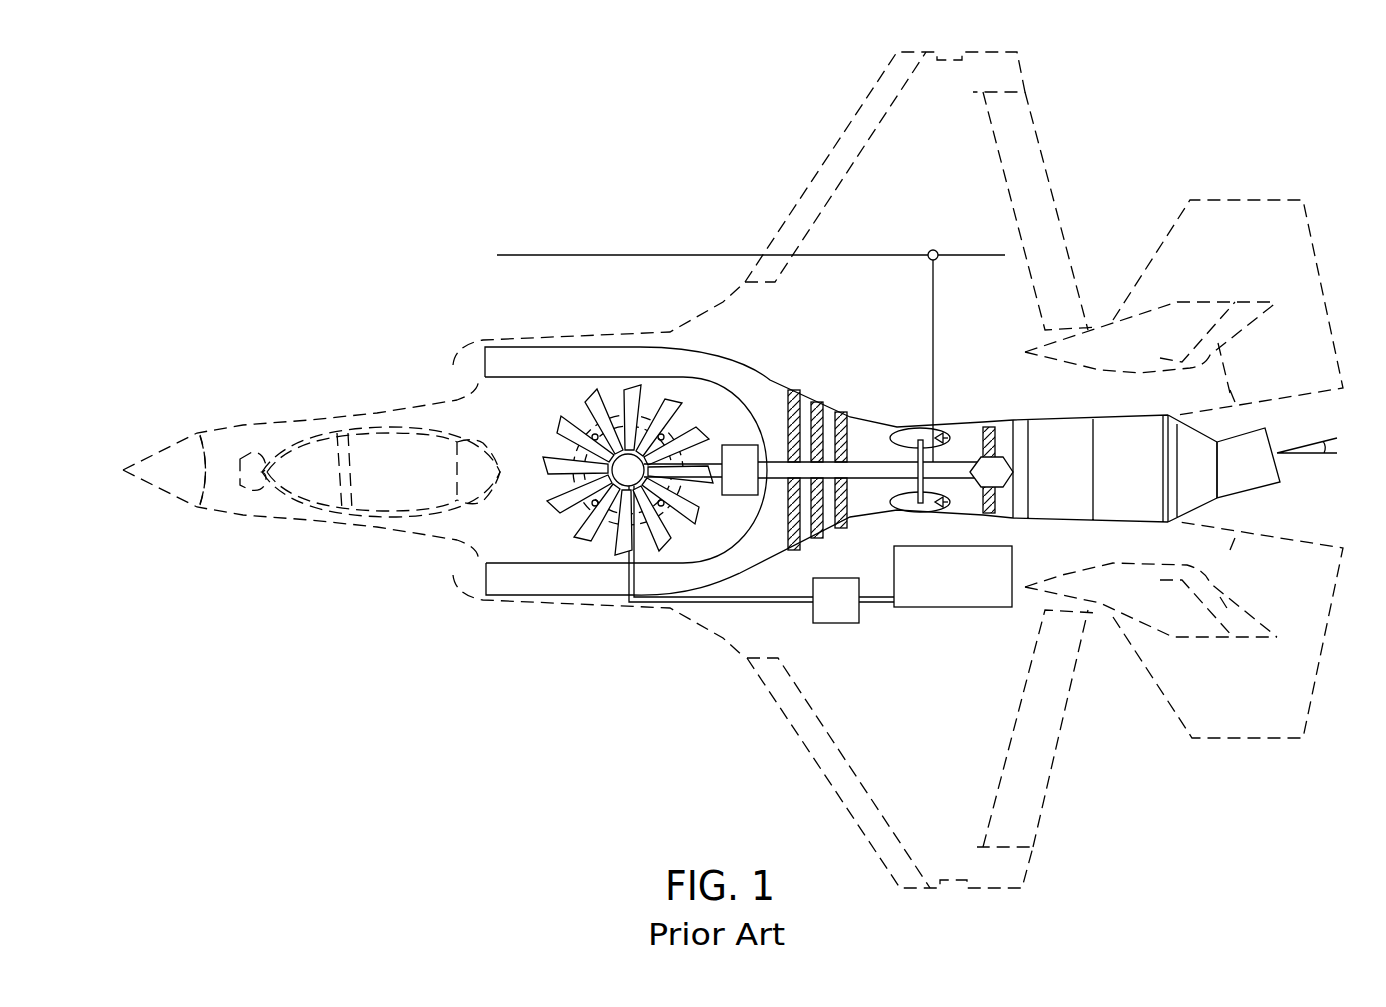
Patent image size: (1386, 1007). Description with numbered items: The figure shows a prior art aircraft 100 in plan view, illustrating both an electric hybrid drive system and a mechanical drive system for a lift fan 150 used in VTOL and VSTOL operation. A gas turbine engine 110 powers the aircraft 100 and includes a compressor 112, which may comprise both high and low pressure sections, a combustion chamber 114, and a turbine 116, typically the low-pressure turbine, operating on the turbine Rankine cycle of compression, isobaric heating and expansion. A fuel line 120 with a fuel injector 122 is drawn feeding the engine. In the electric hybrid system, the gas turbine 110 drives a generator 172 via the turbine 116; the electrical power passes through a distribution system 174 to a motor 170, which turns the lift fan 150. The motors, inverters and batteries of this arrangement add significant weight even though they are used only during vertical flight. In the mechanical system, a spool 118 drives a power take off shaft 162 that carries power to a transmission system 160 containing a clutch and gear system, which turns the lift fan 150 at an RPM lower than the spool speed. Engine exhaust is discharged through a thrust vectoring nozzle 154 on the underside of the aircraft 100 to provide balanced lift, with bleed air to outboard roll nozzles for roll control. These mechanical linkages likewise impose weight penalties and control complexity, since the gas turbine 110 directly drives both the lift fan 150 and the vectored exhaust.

The aircraft 100 is at (1116, 82).
The gas turbine engine 110 is at (1008, 307).
The compressor 112 is at (837, 413).
The combustion chamber 114 is at (910, 512).
The turbine 116 is at (988, 515).
The spool 118 is at (875, 467).
The fuel line 120 is at (683, 253).
The fuel injector 122 is at (933, 250).
The lift fan 150 is at (587, 535).
The thrust vectoring nozzle 154 is at (1175, 468).
The transmission system 160 is at (723, 500).
The power take off shaft 162 is at (778, 460).
The motor 170 is at (597, 427).
The generator 172 is at (953, 607).
The distribution system 174 is at (835, 615).